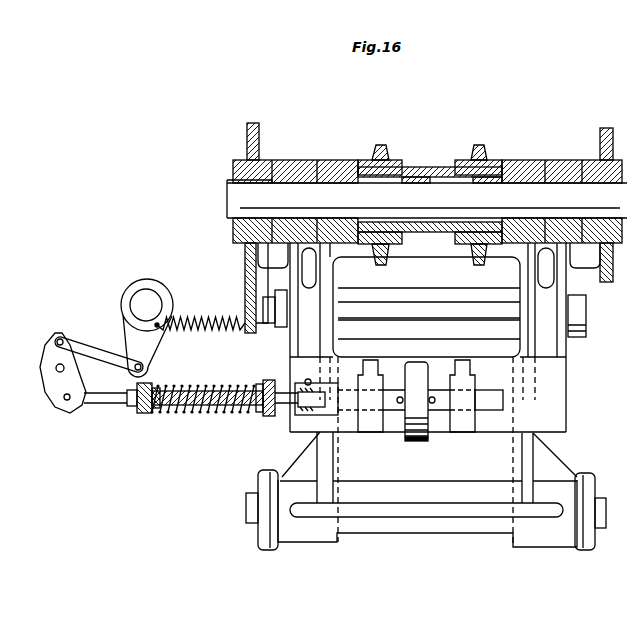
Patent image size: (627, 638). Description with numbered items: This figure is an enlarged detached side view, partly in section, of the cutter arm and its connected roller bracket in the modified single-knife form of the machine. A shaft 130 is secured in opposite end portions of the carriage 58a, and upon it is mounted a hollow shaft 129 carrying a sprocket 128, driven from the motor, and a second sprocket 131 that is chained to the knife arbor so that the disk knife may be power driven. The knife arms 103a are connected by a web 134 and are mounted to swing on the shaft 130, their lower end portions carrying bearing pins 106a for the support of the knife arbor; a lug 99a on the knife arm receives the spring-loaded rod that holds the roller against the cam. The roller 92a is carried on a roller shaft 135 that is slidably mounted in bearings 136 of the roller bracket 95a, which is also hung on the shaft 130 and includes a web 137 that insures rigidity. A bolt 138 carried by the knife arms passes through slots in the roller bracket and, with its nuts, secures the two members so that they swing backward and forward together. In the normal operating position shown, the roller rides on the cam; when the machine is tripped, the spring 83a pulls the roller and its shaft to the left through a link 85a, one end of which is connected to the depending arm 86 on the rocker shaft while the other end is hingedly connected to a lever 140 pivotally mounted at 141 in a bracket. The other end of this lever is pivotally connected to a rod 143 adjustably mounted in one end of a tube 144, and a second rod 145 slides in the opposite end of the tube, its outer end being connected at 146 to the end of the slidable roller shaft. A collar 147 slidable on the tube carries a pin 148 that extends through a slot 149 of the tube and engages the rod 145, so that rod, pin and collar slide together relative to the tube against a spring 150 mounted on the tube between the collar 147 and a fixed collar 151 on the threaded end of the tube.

The carriage 58a is at (252, 289).
The spring 83a is at (200, 314).
The link 85a is at (92, 350).
The depending arm 86 is at (160, 342).
The roller 92a is at (414, 441).
The roller bracket 95a is at (555, 367).
The lug 99a is at (422, 533).
The knife arms 103a is at (535, 450).
The bearing pins 106a is at (248, 517).
The sprocket 128 is at (376, 148).
The hollow shaft 129 is at (428, 166).
The shaft 130 is at (230, 200).
The sprocket 131 is at (480, 152).
The web 134 is at (428, 395).
The roller shaft 135 is at (487, 392).
The bearings 136 is at (370, 428).
The web 137 is at (427, 410).
The bolt 138 is at (584, 313).
The lever 140 is at (54, 381).
The pivot 141 is at (57, 370).
The rod 143 is at (107, 393).
The tube 144 is at (190, 411).
The second rod 145 is at (273, 416).
The connection 146 is at (307, 379).
The collar 147 is at (260, 415).
The pin 148 is at (257, 418).
The slot 149 is at (237, 379).
The spring 150 is at (165, 413).
The fixed collar 151 is at (142, 413).